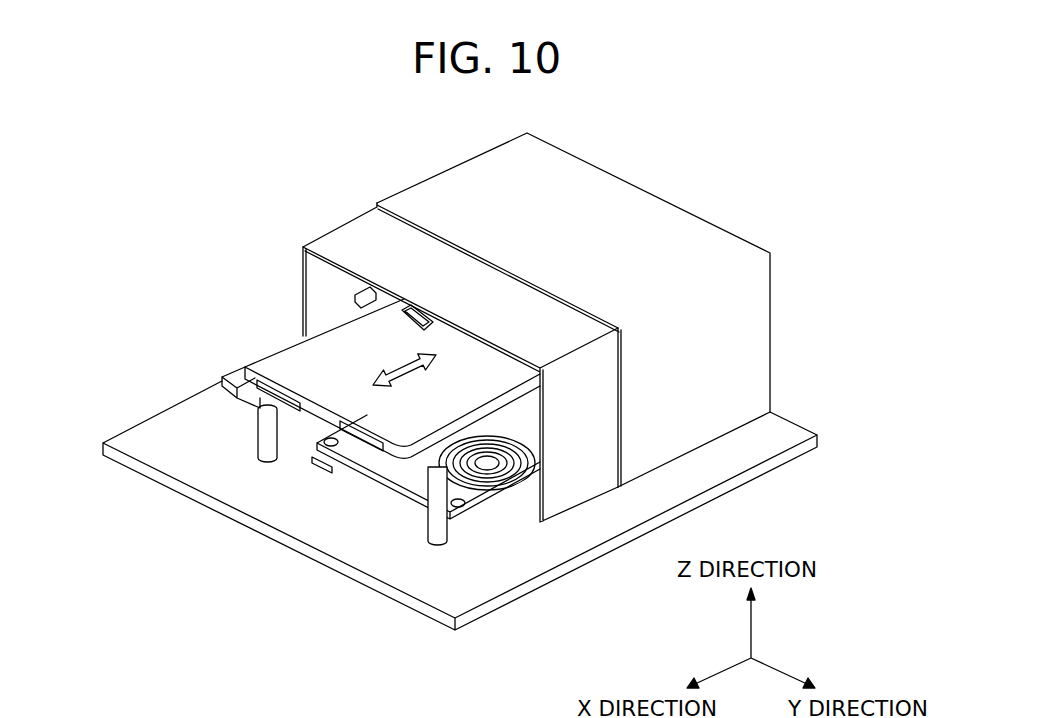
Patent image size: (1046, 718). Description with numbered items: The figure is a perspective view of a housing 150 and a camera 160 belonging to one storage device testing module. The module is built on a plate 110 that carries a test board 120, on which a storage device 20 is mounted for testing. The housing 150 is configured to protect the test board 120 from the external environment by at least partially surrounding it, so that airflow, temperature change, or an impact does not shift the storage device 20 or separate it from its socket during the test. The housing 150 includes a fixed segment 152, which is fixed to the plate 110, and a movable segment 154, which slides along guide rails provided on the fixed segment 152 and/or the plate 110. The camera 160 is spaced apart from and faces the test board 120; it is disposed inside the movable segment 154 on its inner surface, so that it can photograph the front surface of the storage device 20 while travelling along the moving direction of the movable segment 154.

The storage device 20 is at (300, 356).
The plate 110 is at (510, 568).
The test board 120 is at (233, 376).
The housing 150 is at (529, 310).
The fixed segment 152 is at (443, 190).
The movable segment 154 is at (457, 340).
The camera 160 is at (402, 310).